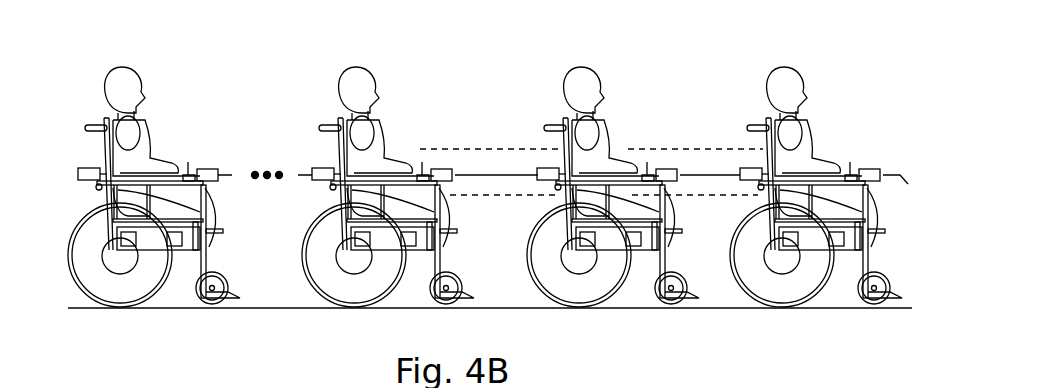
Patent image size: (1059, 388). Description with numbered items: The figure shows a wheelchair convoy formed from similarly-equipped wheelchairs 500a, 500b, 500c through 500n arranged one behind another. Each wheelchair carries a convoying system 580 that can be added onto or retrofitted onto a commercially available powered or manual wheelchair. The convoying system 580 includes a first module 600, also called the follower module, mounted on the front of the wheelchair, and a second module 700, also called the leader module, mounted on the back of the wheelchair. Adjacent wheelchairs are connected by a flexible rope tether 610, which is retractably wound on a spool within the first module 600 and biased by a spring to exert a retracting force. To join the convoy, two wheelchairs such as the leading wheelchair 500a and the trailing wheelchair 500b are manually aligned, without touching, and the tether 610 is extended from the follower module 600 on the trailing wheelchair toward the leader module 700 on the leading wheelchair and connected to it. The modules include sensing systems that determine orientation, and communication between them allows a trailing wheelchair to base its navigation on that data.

The wheelchair 500n is at (93, 105).
The wheelchair 500c is at (325, 105).
The wheelchair 500b is at (560, 105).
The wheelchair 500a is at (762, 110).
The second module 700 is at (88, 162).
The first module 600 is at (200, 160).
The rope tether 610 is at (228, 163).
The convoying system 580 is at (490, 143).